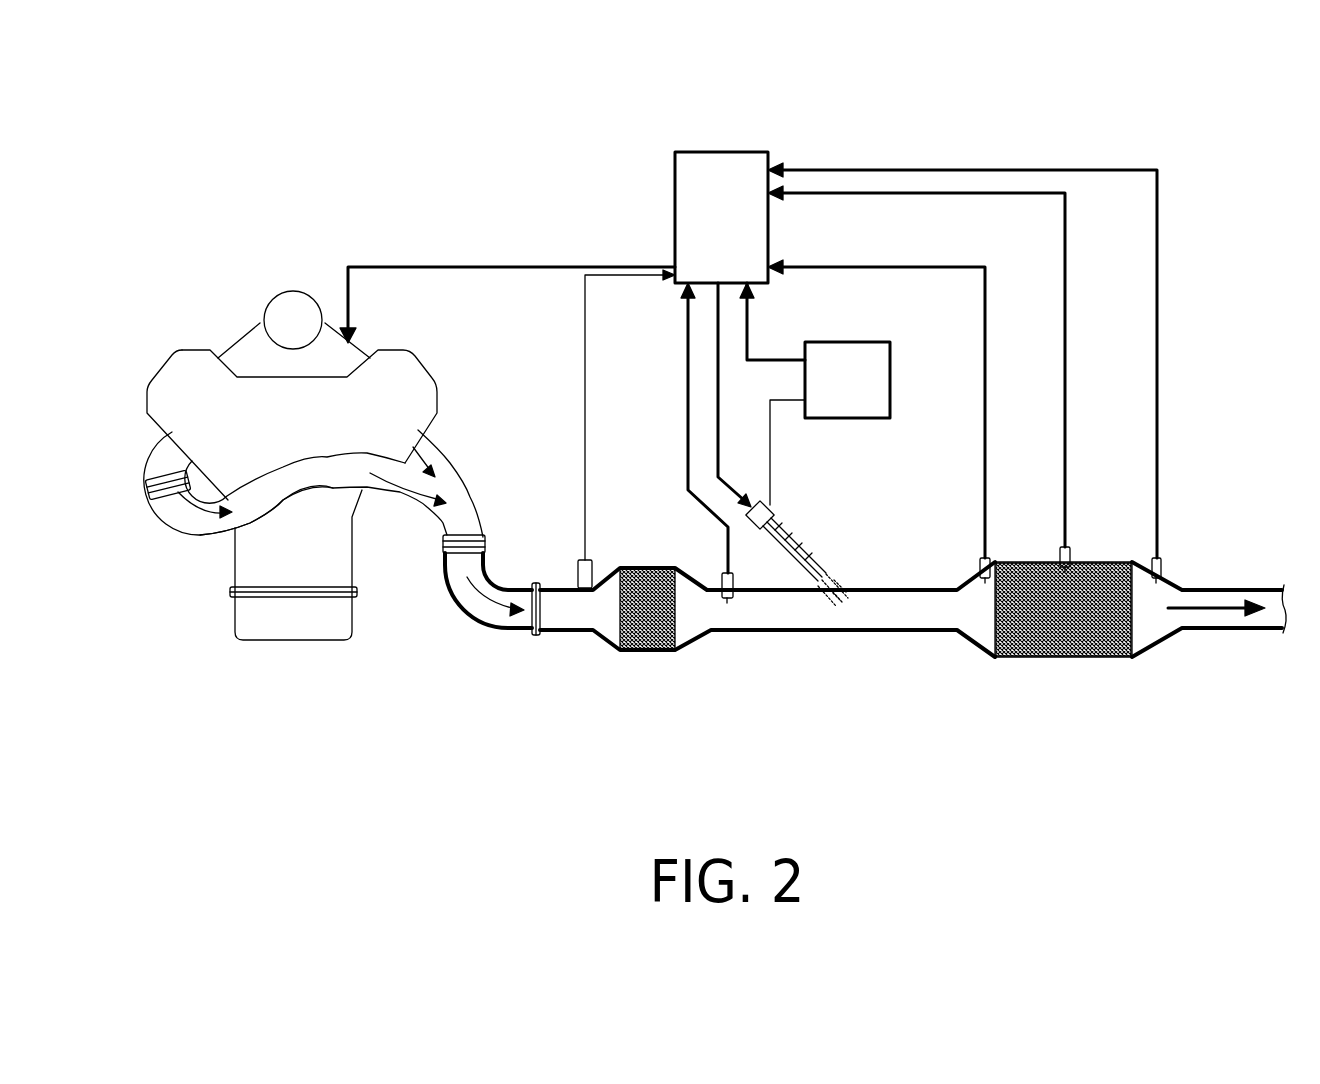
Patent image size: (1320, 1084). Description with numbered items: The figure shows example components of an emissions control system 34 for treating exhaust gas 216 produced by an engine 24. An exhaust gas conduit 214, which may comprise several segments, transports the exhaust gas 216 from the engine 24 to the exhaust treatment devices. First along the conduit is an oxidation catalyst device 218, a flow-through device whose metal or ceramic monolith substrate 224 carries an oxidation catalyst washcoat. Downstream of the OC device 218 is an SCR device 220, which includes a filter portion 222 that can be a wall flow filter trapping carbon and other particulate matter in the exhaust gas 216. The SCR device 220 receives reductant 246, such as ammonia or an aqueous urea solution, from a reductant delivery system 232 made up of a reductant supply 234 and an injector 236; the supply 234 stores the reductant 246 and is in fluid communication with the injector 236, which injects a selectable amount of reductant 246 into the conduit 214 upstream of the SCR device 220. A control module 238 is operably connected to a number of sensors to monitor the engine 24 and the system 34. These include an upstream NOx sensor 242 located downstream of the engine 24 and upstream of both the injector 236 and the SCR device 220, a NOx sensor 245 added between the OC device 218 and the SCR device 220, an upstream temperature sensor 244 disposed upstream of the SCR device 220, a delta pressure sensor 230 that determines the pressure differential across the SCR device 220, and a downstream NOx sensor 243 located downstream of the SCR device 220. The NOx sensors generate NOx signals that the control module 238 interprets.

The engine 24 is at (240, 315).
The exhaust gas conduit 214 is at (455, 453).
The exhaust gas 216 is at (483, 605).
The emissions control system 34 is at (753, 672).
The upstream NOx sensor 242 is at (536, 589).
The oxidation catalyst device 218 is at (635, 660).
The substrate 224 is at (600, 568).
The NOx sensor 245 is at (715, 570).
The injector 236 is at (823, 572).
The reductant 246 is at (837, 603).
The upstream temperature sensor 244 is at (975, 567).
The SCR device 220 is at (1092, 665).
The filter portion 222 is at (1057, 630).
The pressure sensor 230 is at (1072, 555).
The downstream NOx sensor 243 is at (1167, 563).
The reductant delivery system 232 is at (1054, 155).
The control module 238 is at (673, 222).
The reductant supply 234 is at (890, 378).